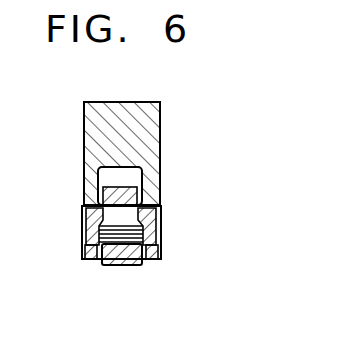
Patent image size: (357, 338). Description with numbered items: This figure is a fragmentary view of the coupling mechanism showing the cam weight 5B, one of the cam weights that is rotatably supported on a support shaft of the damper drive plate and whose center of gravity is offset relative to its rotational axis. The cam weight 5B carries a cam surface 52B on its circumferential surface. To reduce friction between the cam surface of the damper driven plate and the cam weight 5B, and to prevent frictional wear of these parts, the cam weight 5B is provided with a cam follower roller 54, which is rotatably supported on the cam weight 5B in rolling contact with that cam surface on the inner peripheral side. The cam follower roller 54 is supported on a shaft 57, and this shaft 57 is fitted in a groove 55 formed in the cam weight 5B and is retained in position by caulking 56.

The cam weight 5B is at (137, 131).
The cam surface 52B is at (150, 262).
The cam follower roller 54 is at (150, 178).
The groove 55 is at (98, 183).
The caulking 56 is at (82, 247).
The shaft 57 is at (161, 229).